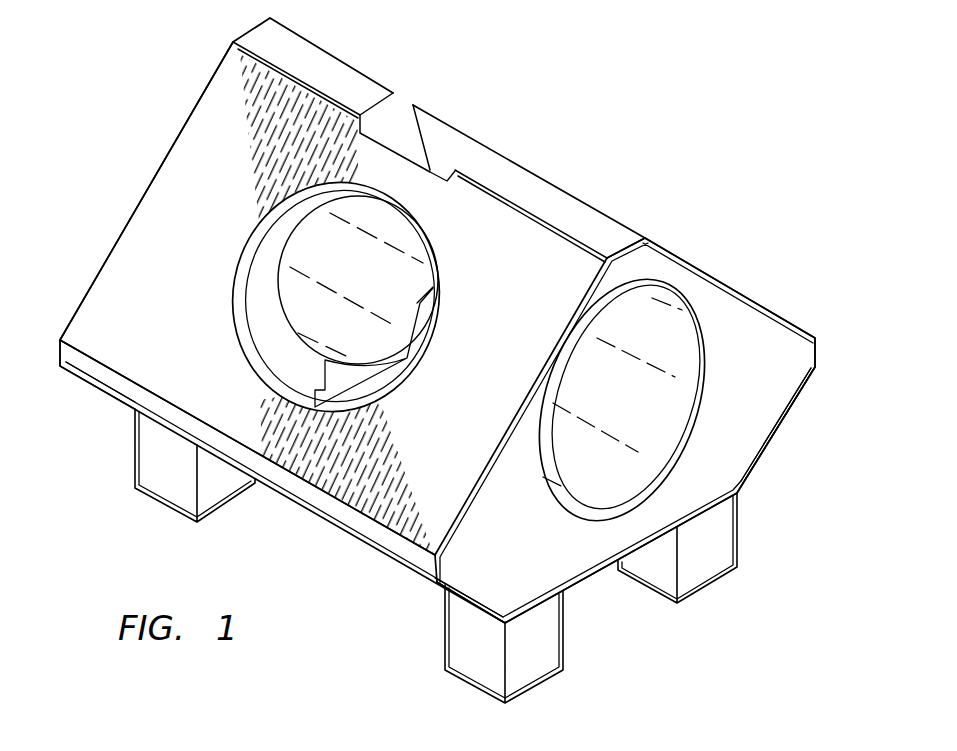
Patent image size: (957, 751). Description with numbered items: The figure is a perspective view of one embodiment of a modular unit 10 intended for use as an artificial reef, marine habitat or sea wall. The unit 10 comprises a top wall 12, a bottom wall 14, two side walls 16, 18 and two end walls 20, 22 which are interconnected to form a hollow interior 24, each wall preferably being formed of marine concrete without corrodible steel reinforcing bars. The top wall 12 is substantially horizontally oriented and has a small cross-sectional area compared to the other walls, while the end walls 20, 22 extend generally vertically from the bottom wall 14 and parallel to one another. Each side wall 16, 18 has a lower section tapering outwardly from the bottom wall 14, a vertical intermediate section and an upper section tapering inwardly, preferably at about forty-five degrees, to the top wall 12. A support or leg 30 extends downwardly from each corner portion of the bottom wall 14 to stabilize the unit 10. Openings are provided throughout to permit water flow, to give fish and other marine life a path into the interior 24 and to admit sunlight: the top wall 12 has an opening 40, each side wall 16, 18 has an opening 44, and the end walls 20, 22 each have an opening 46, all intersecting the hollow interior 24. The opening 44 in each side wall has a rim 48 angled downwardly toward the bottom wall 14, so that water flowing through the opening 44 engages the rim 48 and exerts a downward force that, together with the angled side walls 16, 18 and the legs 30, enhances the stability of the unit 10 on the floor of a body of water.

The modular unit 10 is at (735, 102).
The top wall 12 is at (578, 213).
The bottom wall 14 is at (380, 596).
The side wall 16 is at (91, 406).
The side wall 18 is at (702, 225).
The end wall 20 is at (192, 113).
The end wall 22 is at (750, 430).
The hollow interior 24 is at (631, 401).
The leg 30 is at (180, 502).
The opening 40 is at (488, 157).
The opening 44 is at (313, 260).
The opening 46 is at (590, 485).
The rim 48 is at (302, 392).